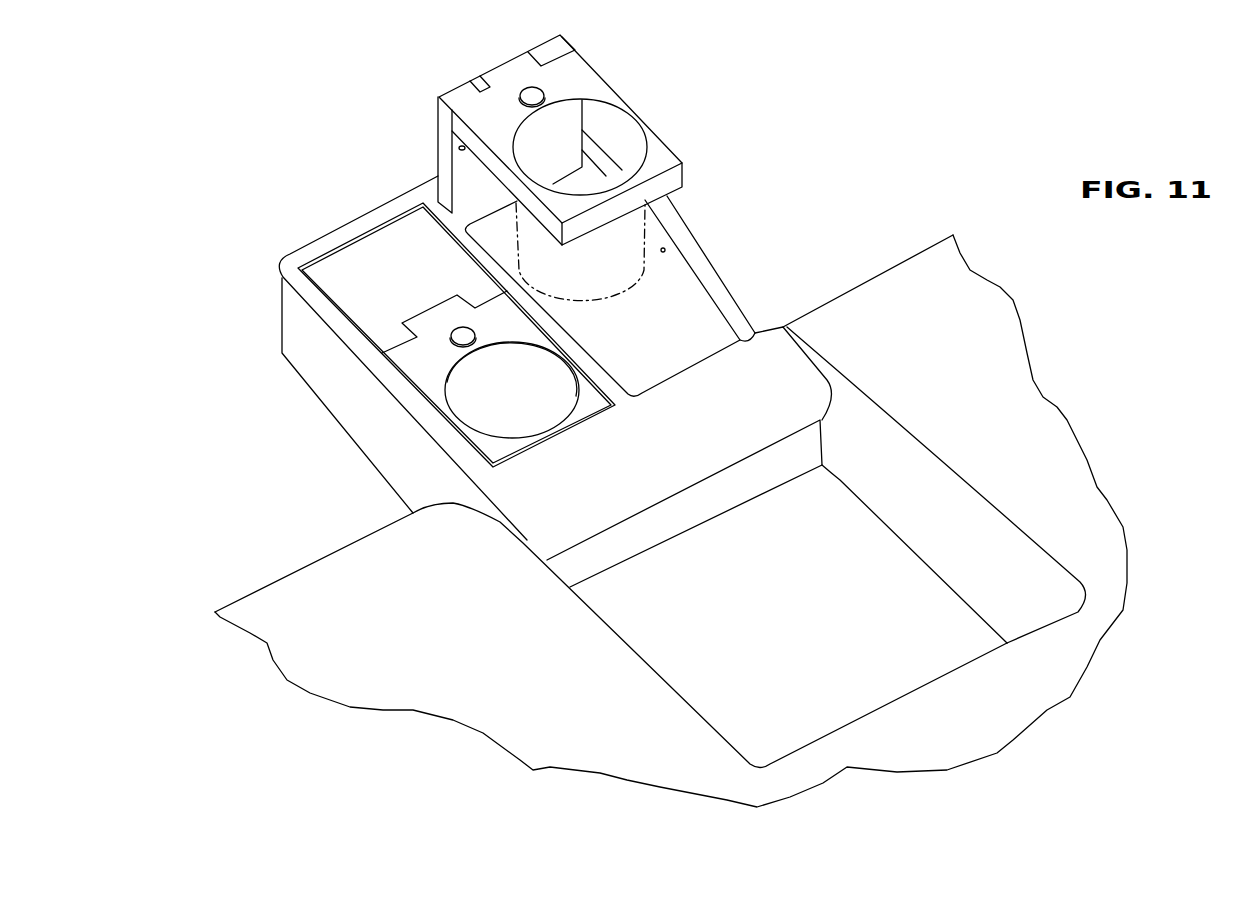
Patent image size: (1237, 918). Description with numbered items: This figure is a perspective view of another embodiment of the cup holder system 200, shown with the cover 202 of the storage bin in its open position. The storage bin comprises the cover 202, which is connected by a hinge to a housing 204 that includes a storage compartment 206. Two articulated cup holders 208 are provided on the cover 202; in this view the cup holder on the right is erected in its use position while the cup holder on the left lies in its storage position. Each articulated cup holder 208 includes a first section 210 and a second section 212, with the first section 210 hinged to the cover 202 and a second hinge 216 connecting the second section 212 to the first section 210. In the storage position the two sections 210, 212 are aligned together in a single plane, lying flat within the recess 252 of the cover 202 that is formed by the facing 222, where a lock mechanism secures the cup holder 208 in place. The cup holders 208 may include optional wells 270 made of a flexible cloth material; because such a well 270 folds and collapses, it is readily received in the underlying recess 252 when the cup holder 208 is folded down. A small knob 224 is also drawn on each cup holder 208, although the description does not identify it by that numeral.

The cup holder system 200 is at (762, 64).
The cover 202 is at (330, 382).
The housing 204 is at (932, 490).
The storage compartment 206 is at (752, 685).
The articulated cup holder 208 is at (650, 150).
The first section 210 is at (440, 160).
The second section 212 is at (600, 92).
The second hinge 216 is at (498, 73).
The facing 222 is at (682, 237).
The knob 224 is at (535, 92).
The recess 252 is at (655, 360).
The well 270 is at (683, 265).